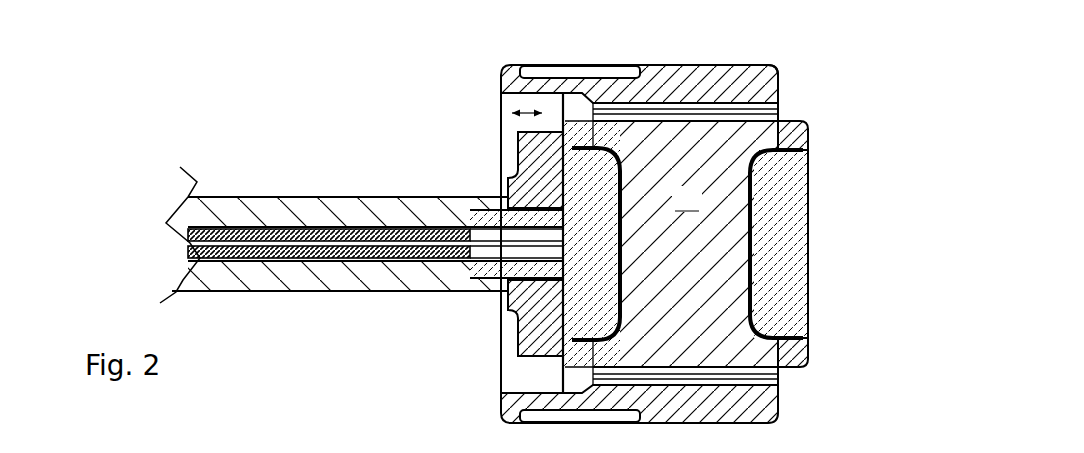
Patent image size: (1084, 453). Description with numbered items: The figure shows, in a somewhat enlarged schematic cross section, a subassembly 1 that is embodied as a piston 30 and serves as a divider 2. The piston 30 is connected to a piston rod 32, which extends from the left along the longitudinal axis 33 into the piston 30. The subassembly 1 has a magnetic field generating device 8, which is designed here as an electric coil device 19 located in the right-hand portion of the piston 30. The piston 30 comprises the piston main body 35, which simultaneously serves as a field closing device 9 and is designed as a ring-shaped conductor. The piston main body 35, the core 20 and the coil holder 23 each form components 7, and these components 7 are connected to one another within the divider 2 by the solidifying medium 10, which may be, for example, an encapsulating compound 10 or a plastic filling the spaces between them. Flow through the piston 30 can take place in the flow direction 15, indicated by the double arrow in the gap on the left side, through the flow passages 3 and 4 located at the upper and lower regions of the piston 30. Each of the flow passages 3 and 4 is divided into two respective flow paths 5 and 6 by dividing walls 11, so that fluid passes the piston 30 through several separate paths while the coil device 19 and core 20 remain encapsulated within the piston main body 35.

The subassembly 1 is at (340, 116).
The divider 2 is at (697, 64).
The flow passage 3 is at (787, 110).
The flow passage 4 is at (787, 377).
The flow path 5 is at (787, 105).
The flow path 6 is at (787, 121).
The component 7 is at (757, 64).
The magnetic field generating device 8 is at (793, 293).
The field closing device 9 is at (510, 68).
The solidifying medium 10 is at (795, 201).
The dividing wall 11 is at (665, 113).
The flow direction 15 is at (515, 123).
The electric coil device 19 is at (790, 252).
The core 20 is at (699, 244).
The coil holder 23 is at (628, 273).
The piston 30 is at (501, 80).
The piston rod 32 is at (290, 197).
The longitudinal axis 33 is at (181, 167).
The piston main body 35 is at (500, 414).